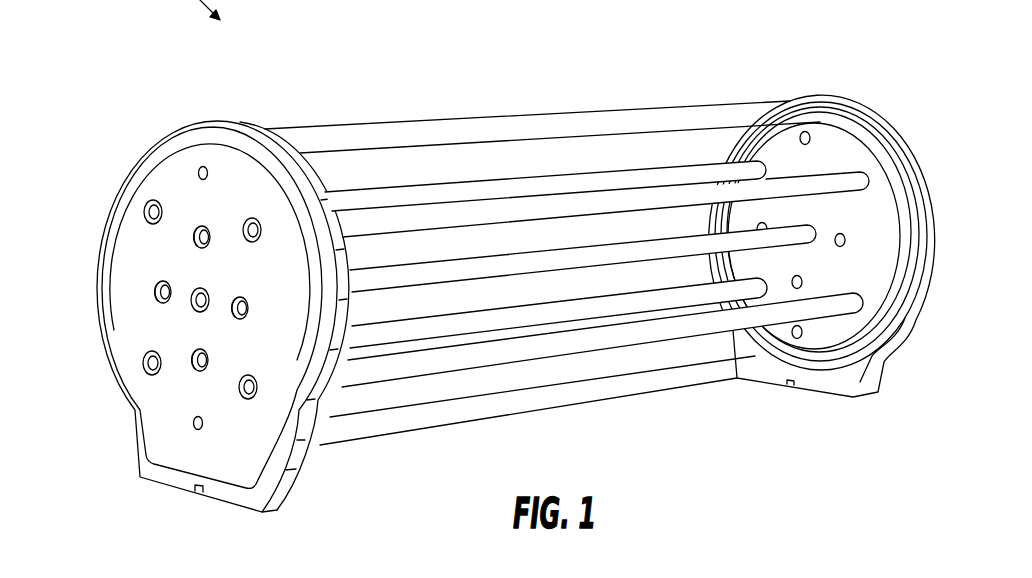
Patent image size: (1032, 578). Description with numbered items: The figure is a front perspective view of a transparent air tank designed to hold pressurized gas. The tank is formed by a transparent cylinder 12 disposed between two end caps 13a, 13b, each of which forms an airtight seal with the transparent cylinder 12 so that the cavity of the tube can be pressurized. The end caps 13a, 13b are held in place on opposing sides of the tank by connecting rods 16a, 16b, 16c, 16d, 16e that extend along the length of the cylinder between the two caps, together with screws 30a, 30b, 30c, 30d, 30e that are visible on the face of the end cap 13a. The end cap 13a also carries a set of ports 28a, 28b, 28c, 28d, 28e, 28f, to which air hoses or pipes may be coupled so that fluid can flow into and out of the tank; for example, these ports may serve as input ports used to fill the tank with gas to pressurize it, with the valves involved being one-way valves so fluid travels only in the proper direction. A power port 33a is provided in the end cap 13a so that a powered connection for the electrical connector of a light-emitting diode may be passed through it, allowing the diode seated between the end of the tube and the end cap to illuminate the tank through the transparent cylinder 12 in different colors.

The transparent cylinder 12 is at (378, 128).
The end cap 13a is at (172, 131).
The end cap 13b is at (850, 99).
The connecting rod 16a is at (553, 182).
The connecting rod 16b is at (583, 202).
The connecting rod 16c is at (618, 257).
The connecting rod 16d is at (685, 328).
The connecting rod 16e is at (637, 302).
The port 28a is at (198, 172).
The port 28b is at (194, 238).
The port 28c is at (156, 290).
The port 28d is at (233, 313).
The port 28e is at (193, 366).
The port 28f is at (193, 425).
The screw 30a is at (145, 211).
The screw 30b is at (263, 233).
The screw 30c is at (192, 305).
The screw 30d is at (257, 397).
The screw 30e is at (145, 367).
The power port 33a is at (195, 498).